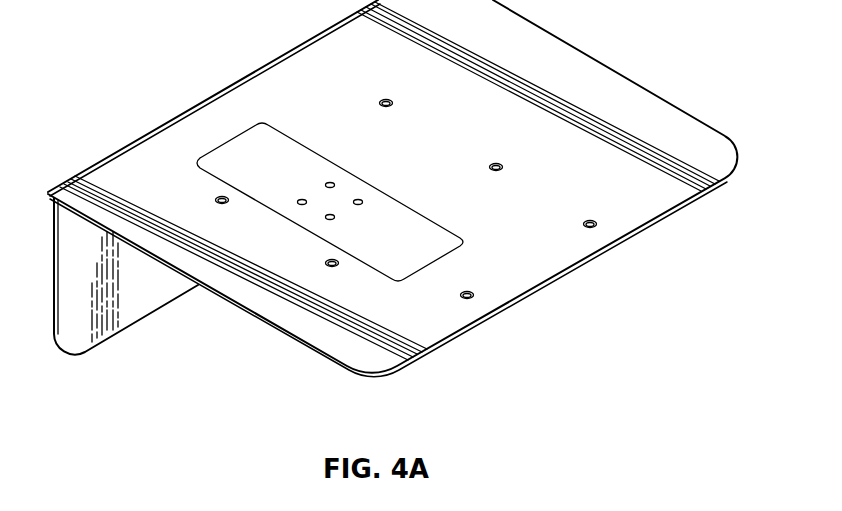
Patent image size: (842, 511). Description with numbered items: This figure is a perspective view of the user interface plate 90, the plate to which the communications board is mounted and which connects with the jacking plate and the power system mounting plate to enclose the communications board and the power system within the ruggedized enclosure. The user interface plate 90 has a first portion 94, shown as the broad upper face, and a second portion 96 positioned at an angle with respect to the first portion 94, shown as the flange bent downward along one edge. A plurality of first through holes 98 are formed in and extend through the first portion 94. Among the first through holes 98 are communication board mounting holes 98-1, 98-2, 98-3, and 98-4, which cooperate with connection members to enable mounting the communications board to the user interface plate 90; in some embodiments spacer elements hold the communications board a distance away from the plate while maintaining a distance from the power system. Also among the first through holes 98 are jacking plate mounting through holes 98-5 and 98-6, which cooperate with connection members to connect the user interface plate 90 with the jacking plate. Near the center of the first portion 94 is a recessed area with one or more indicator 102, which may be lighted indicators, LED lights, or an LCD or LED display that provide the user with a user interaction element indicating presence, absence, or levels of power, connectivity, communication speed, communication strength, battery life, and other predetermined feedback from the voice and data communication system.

The user interface plate 90 is at (596, 74).
The first portion 94 is at (686, 127).
The second portion 96 is at (108, 322).
The first through holes 98 is at (365, 195).
The communication board mounting hole 98-1 is at (381, 100).
The communication board mounting hole 98-2 is at (491, 165).
The communication board mounting hole 98-3 is at (326, 261).
The communication board mounting hole 98-4 is at (218, 198).
The jacking plate mounting through hole 98-5 is at (586, 221).
The jacking plate mounting through hole 98-6 is at (472, 292).
The indicator 102 is at (326, 183).